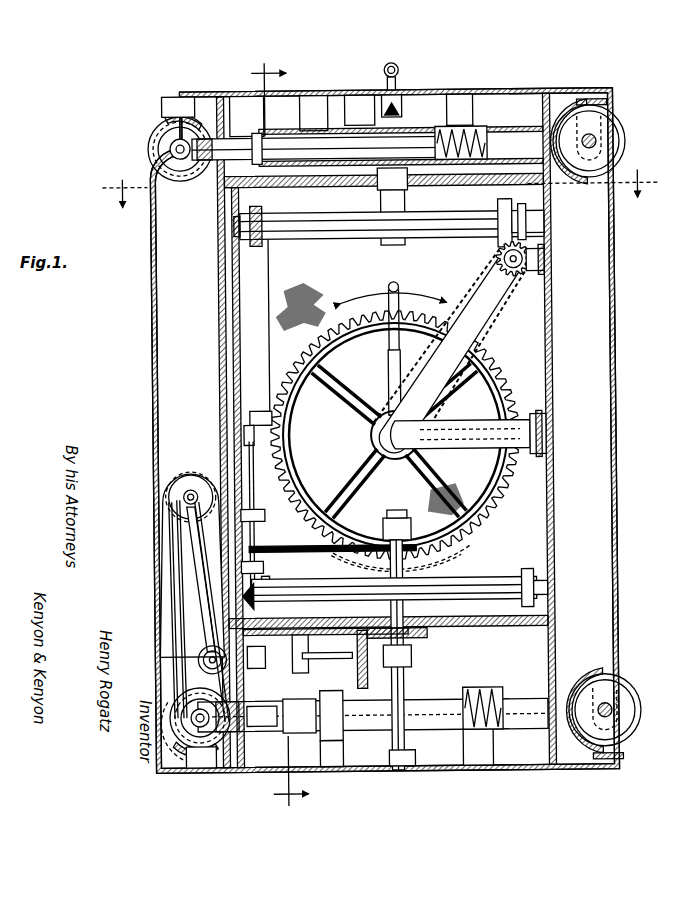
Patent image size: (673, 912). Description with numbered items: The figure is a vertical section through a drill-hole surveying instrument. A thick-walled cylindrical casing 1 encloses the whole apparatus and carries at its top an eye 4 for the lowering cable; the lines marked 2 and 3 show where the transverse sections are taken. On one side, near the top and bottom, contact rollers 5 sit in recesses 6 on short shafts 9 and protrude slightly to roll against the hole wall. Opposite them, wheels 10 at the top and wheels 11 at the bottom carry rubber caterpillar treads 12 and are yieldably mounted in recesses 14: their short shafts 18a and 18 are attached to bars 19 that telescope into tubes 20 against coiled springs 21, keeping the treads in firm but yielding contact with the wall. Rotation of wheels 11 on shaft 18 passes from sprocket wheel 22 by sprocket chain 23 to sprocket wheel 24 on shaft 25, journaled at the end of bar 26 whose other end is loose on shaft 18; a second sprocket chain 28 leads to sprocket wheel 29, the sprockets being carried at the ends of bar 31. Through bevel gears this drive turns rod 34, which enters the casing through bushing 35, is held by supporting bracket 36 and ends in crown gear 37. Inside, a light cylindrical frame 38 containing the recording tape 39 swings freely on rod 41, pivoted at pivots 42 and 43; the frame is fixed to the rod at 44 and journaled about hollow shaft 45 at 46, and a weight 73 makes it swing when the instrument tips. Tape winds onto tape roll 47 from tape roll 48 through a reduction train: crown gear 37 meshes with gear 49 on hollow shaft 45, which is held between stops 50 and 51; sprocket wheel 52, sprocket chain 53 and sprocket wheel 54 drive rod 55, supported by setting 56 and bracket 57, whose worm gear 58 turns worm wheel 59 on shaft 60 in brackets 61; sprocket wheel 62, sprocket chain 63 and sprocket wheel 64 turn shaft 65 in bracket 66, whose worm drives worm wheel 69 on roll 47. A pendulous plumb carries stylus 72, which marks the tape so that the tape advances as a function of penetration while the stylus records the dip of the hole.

The cylindrical casing 1 is at (480, 92).
The section line 2 is at (267, 435).
The section line 3 is at (379, 185).
The eye 4 is at (402, 70).
The contact rollers 5 is at (620, 128).
The recesses 6 is at (587, 186).
The short shafts 9 is at (600, 142).
The wheels 10 is at (153, 146).
The wheels 11 is at (195, 768).
The caterpillar treads 12 is at (153, 373).
The recesses 14 is at (178, 115).
The short shaft 18 is at (190, 712).
The short shaft 18a is at (180, 145).
The bars 19 is at (280, 140).
The tubes 20 is at (450, 124).
The coiled springs 21 is at (490, 132).
The sprocket wheel 22 is at (185, 772).
The sprocket chain 23 is at (170, 612).
The sprocket wheel 24 is at (183, 470).
The shaft 25 is at (194, 488).
The bar 26 is at (190, 536).
The sprocket chain 28 is at (178, 592).
The sprocket wheel 29 is at (196, 660).
The bar 31 is at (205, 565).
The rod 34 is at (266, 655).
The bushing 35 is at (325, 639).
The supporting bracket 36 is at (306, 656).
The crown gear 37 is at (355, 672).
The cylindrical frame 38 is at (553, 346).
The recording tape 39 is at (265, 296).
The rod 41 is at (400, 218).
The pivot 42 is at (385, 104).
The pivot 43 is at (412, 758).
The fixing point 44 is at (392, 184).
The hollow shaft 45 is at (420, 565).
The journal 46 is at (402, 612).
The tape roll 47 is at (300, 222).
The tape roll 48 is at (340, 596).
The gear 49 is at (425, 636).
The stop 50 is at (409, 656).
The stop 51 is at (382, 525).
The sprocket wheel 52 is at (455, 542).
The sprocket chain 53 is at (322, 552).
The sprocket wheel 54 is at (262, 548).
The rod 55 is at (264, 516).
The setting 56 is at (258, 606).
The bracket 57 is at (330, 495).
The worm gear 58 is at (252, 410).
The worm wheel 59 is at (290, 352).
The shaft 60 is at (383, 436).
The brackets 61 is at (546, 435).
The sprocket wheel 62 is at (412, 460).
The sprocket chain 63 is at (425, 360).
The sprocket wheel 64 is at (505, 272).
The shaft 65 is at (518, 252).
The bracket 66 is at (546, 262).
The worm wheel 69 is at (505, 200).
The stylus 72 is at (398, 290).
The weight 73 is at (266, 585).